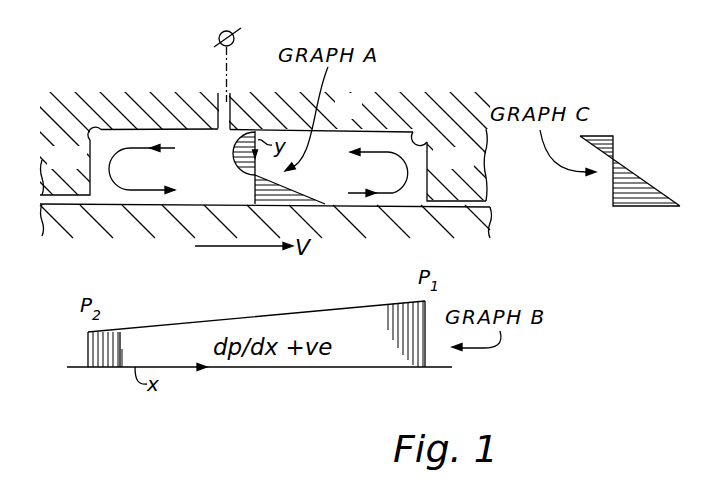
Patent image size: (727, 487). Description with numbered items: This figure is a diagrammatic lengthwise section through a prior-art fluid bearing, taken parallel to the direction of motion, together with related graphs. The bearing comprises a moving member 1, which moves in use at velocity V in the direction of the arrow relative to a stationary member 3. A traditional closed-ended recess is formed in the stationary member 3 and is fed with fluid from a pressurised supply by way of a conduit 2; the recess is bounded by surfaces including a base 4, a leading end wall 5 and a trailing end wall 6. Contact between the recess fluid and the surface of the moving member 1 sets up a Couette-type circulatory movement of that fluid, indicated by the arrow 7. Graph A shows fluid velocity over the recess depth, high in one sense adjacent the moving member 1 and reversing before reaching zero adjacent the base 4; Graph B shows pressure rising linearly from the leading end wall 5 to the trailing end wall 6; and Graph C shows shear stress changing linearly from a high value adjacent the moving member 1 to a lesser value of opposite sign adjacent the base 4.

The moving member 1 is at (118, 194).
The conduit 2 is at (218, 116).
The stationary member 3 is at (306, 145).
The base 4 is at (204, 131).
The leading end wall 5 is at (97, 129).
The trailing end wall 6 is at (414, 131).
The arrow 7 is at (400, 157).